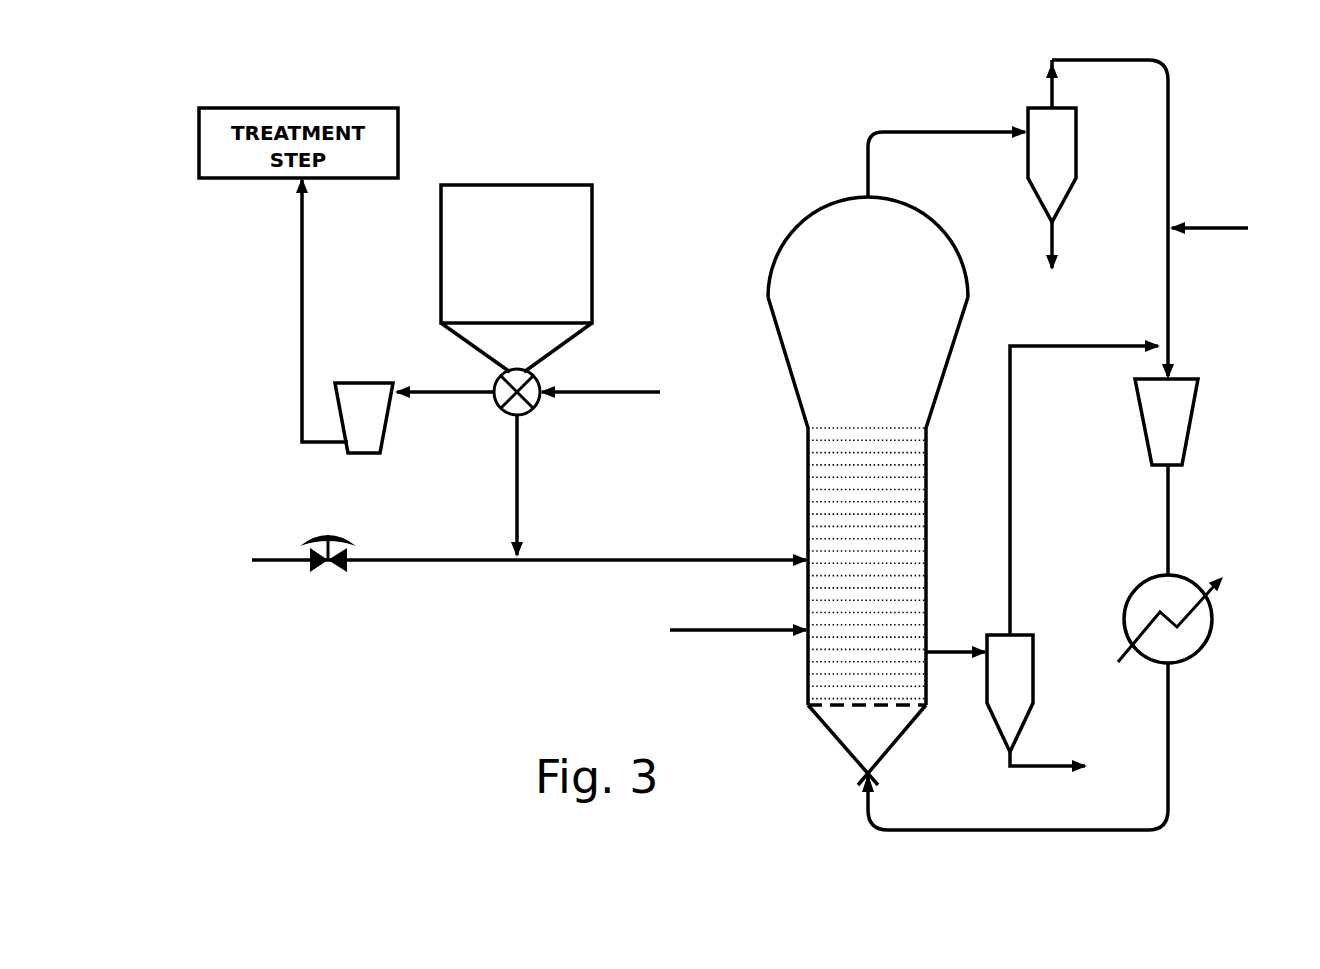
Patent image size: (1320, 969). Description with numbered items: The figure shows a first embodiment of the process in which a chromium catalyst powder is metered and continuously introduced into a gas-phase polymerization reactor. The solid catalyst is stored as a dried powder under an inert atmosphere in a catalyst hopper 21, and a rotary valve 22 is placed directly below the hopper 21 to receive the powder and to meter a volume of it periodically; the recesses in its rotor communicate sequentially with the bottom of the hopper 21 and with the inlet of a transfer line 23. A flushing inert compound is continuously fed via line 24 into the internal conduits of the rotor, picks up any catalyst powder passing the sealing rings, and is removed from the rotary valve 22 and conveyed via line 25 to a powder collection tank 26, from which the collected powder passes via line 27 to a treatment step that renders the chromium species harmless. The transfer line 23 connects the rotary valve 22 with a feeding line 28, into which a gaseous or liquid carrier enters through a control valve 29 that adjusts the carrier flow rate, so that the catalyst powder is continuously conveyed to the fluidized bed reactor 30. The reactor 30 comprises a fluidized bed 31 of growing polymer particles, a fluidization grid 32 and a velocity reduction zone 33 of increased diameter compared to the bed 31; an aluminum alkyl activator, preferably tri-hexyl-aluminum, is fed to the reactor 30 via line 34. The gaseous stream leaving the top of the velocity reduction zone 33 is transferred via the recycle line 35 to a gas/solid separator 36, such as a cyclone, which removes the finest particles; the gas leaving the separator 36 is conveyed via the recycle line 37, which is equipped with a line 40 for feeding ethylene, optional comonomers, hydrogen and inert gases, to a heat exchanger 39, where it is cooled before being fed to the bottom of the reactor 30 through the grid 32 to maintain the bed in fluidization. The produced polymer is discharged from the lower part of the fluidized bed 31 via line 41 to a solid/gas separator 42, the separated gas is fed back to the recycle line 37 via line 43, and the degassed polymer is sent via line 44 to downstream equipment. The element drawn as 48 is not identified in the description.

The catalyst hopper 21 is at (441, 243).
The rotary valve 22 is at (505, 412).
The transfer line 23 is at (523, 485).
The line 24 is at (636, 392).
The line 25 is at (414, 392).
The powder collection tank 26 is at (356, 454).
The line 27 is at (302, 282).
The feeding line 28 is at (630, 558).
The control valve 29 is at (318, 572).
The fluidized bed reactor 30 is at (794, 428).
The fluidized bed 31 is at (862, 535).
The fluidization grid 32 is at (847, 707).
The velocity reduction zone 33 is at (866, 323).
The line 34 is at (717, 631).
The recycle line 35 is at (938, 131).
The gas/solid separator 36 is at (1076, 178).
The recycle line 37 is at (1167, 128).
The heat exchanger 39 is at (1200, 650).
The line 40 is at (1205, 228).
The line 41 is at (953, 653).
The solid/gas separator 42 is at (1033, 655).
The line 43 is at (1010, 518).
The line 44 is at (1038, 766).
The compressor 48 is at (1182, 438).